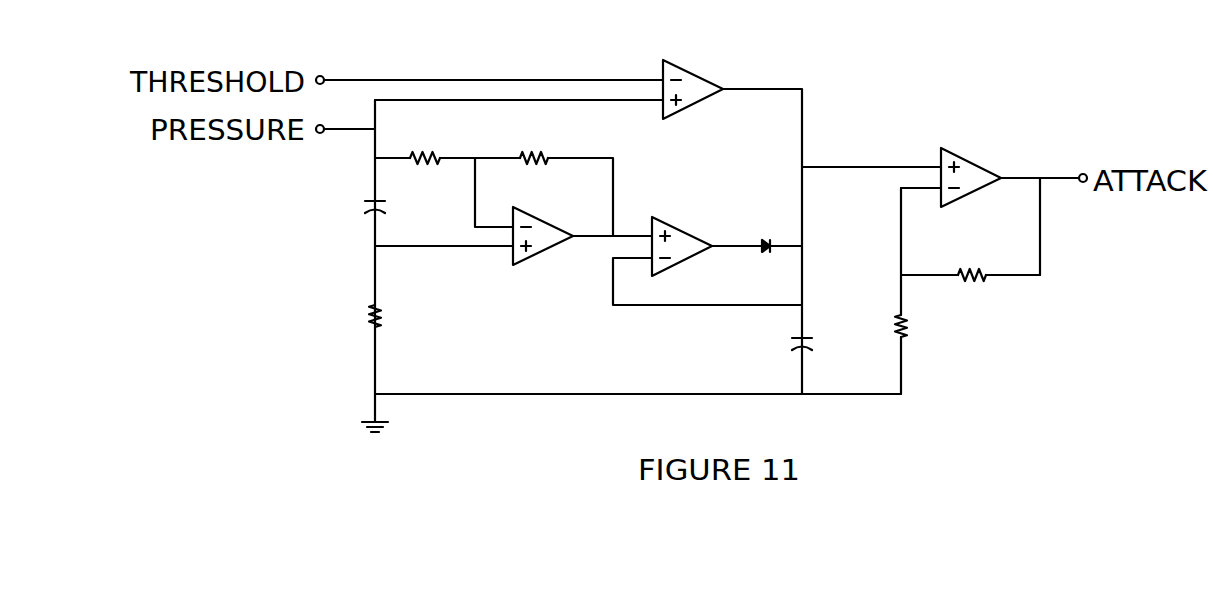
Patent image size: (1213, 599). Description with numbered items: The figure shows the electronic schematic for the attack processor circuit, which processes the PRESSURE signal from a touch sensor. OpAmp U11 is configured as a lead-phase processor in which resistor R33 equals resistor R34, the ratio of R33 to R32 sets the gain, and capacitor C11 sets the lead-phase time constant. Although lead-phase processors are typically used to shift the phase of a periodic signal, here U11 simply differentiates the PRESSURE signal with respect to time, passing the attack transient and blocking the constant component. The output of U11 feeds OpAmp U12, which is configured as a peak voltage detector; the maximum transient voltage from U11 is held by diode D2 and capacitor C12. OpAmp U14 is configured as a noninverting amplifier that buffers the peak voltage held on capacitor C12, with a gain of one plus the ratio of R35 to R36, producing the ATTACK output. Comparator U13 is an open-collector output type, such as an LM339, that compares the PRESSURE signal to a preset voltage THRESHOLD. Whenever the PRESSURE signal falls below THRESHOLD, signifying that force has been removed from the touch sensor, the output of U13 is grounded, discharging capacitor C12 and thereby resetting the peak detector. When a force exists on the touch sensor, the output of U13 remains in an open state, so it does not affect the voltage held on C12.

The OpAmp U11 is at (545, 225).
The OpAmp U12 is at (686, 236).
The Comparator U13 is at (696, 77).
The OpAmp U14 is at (975, 166).
The resistor R32 is at (427, 140).
The resistor R33 is at (536, 140).
The resistor R34 is at (407, 320).
The resistor R35 is at (964, 258).
The resistor R36 is at (933, 330).
The capacitor C11 is at (402, 212).
The capacitor C12 is at (831, 350).
The diode D2 is at (765, 228).